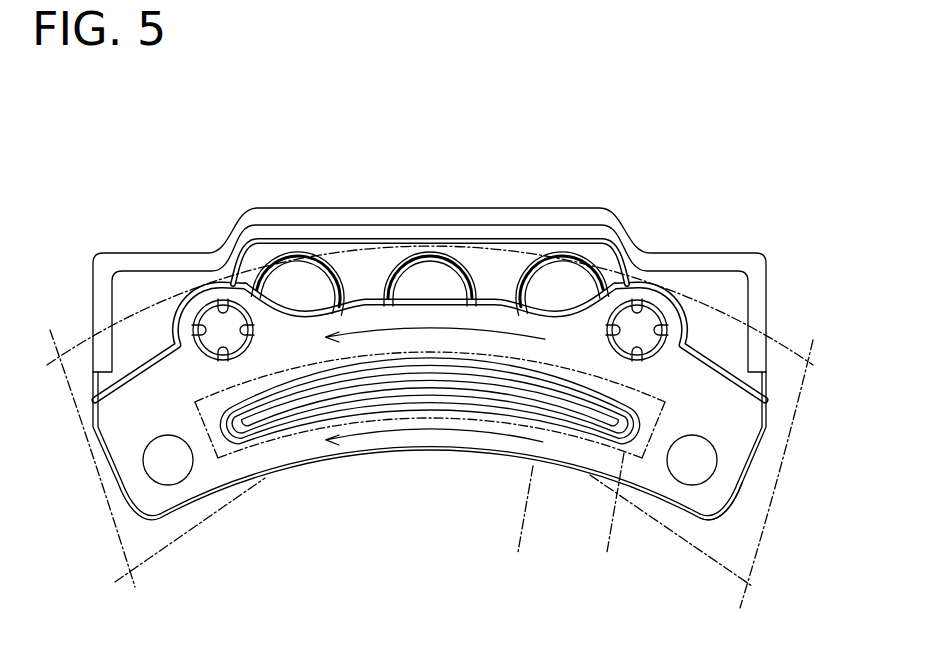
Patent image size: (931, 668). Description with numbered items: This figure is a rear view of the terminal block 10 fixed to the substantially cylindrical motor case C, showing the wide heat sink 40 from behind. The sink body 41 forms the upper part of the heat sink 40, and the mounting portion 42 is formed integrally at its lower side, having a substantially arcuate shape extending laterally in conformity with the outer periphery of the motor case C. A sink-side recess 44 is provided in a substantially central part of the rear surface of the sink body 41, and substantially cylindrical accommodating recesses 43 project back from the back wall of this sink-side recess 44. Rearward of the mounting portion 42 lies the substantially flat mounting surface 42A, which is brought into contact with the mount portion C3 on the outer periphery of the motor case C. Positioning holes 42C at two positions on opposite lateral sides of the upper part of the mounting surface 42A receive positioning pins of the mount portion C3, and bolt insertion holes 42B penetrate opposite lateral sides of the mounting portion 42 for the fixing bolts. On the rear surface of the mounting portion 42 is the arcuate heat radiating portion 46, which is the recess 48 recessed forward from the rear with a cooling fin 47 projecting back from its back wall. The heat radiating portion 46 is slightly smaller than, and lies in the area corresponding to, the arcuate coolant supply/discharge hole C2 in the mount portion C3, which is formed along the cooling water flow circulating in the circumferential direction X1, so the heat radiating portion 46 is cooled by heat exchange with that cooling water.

The terminal block 10 is at (389, 158).
The heat sink 40 is at (471, 463).
The sink body 41 is at (720, 293).
The mounting portion 42 is at (735, 521).
The mounting surface 42A is at (578, 450).
The bolt insertion holes 42B is at (688, 476).
The positioning holes 42C is at (203, 318).
The accommodating recesses 43 is at (566, 277).
The sink-side recess 44 is at (307, 250).
The heat radiating portion 46 is at (335, 547).
The cooling fin 47 is at (262, 418).
The recess 48 is at (298, 411).
The circumferential direction X1 is at (443, 330).
The motor case C is at (180, 527).
The coolant supply/discharge hole C2 is at (611, 518).
The mount portion C3 is at (518, 524).